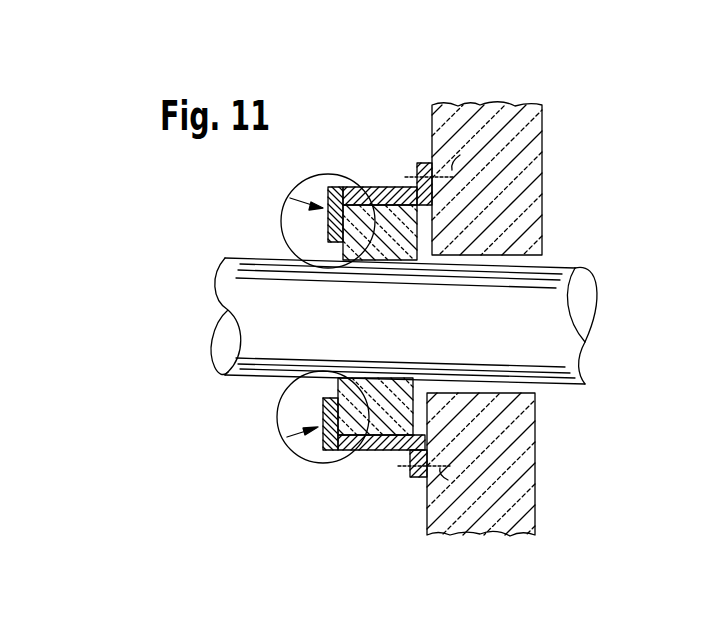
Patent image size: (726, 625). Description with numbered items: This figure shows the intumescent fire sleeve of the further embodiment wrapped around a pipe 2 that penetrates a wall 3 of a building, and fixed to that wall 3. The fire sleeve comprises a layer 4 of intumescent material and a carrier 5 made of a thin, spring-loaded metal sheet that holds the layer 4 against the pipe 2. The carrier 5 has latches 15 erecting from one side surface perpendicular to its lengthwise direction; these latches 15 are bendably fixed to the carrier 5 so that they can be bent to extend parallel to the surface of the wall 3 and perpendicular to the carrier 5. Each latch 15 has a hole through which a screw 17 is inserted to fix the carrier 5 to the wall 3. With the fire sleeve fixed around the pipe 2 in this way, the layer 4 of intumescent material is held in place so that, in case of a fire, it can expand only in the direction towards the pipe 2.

The pipe 2 is at (567, 342).
The wall 3 is at (517, 175).
The layer of intumescent material 4 is at (328, 417).
The carrier 5 is at (366, 452).
The latches 15 is at (418, 163).
The screws 17 is at (450, 170).